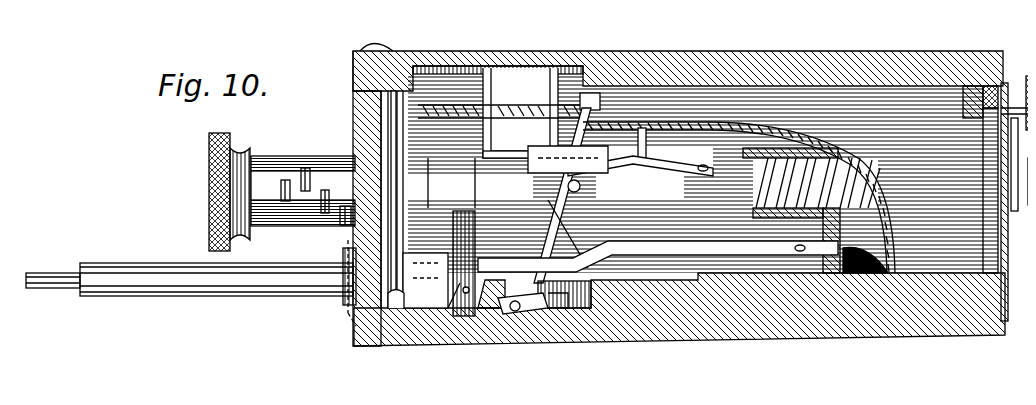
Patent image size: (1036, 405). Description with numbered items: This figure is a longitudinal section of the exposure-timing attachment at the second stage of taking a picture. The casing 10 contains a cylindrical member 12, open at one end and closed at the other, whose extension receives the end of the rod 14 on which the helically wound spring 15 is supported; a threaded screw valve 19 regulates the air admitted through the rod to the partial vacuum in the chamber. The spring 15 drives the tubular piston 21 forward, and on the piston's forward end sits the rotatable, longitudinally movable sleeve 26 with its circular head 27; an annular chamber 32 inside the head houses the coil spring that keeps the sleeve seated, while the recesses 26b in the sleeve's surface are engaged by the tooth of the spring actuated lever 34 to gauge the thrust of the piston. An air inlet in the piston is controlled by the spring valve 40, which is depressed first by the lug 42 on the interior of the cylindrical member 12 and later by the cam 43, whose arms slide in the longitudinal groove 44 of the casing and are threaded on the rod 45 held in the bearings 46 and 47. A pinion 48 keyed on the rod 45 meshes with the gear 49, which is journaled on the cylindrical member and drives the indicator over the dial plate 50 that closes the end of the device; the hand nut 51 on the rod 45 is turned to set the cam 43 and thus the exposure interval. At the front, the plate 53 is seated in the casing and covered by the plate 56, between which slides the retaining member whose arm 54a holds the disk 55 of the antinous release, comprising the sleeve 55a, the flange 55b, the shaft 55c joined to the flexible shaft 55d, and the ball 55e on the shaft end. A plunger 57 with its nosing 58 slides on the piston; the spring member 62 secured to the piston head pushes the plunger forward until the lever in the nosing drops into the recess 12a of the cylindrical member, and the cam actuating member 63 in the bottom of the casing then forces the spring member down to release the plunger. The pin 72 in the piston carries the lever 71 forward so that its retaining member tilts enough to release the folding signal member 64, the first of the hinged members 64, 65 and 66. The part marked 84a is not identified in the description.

The casing 10 is at (828, 48).
The cylindrical member 12 is at (885, 195).
The recess 12a is at (564, 294).
The rod 14 is at (748, 165).
The helically wound spring 15 is at (870, 176).
The threaded screw valve 19 is at (1025, 188).
The tubular piston 21 is at (604, 173).
The sleeve 26 is at (303, 178).
The recesses 26b is at (325, 190).
The circular head 27 is at (201, 158).
The annular chamber 32 is at (1010, 135).
The spring actuated lever 34 is at (345, 104).
The spring valve 40 is at (640, 166).
The lug 42 is at (641, 161).
The cam 43 is at (510, 130).
The longitudinal groove 44 is at (445, 60).
The rod 45 is at (748, 95).
The bearing 46 is at (581, 92).
The bearing 47 is at (958, 75).
The pinion 48 is at (972, 75).
The gear 49 is at (990, 260).
The dial plate 50 is at (995, 240).
The hand nut 51 is at (1026, 68).
The plate 53 is at (345, 78).
The arm 54a is at (338, 243).
The disk 55 is at (330, 318).
The sleeve 55a is at (170, 256).
The flange 55b is at (332, 290).
The shaft 55c is at (400, 300).
The flexible shaft 55d is at (48, 268).
The ball 55e is at (452, 300).
The plate 56 is at (344, 52).
The plunger 57 is at (467, 200).
The nosing 58 is at (462, 308).
The spring member 62 is at (658, 256).
The cam actuating member 63 is at (415, 300).
The hinged member 64 is at (512, 343).
The hinged member 65 is at (520, 306).
The hinged member 66 is at (545, 305).
The lever 71 is at (540, 190).
The pin 72 is at (573, 179).
The cap 84a is at (360, 42).